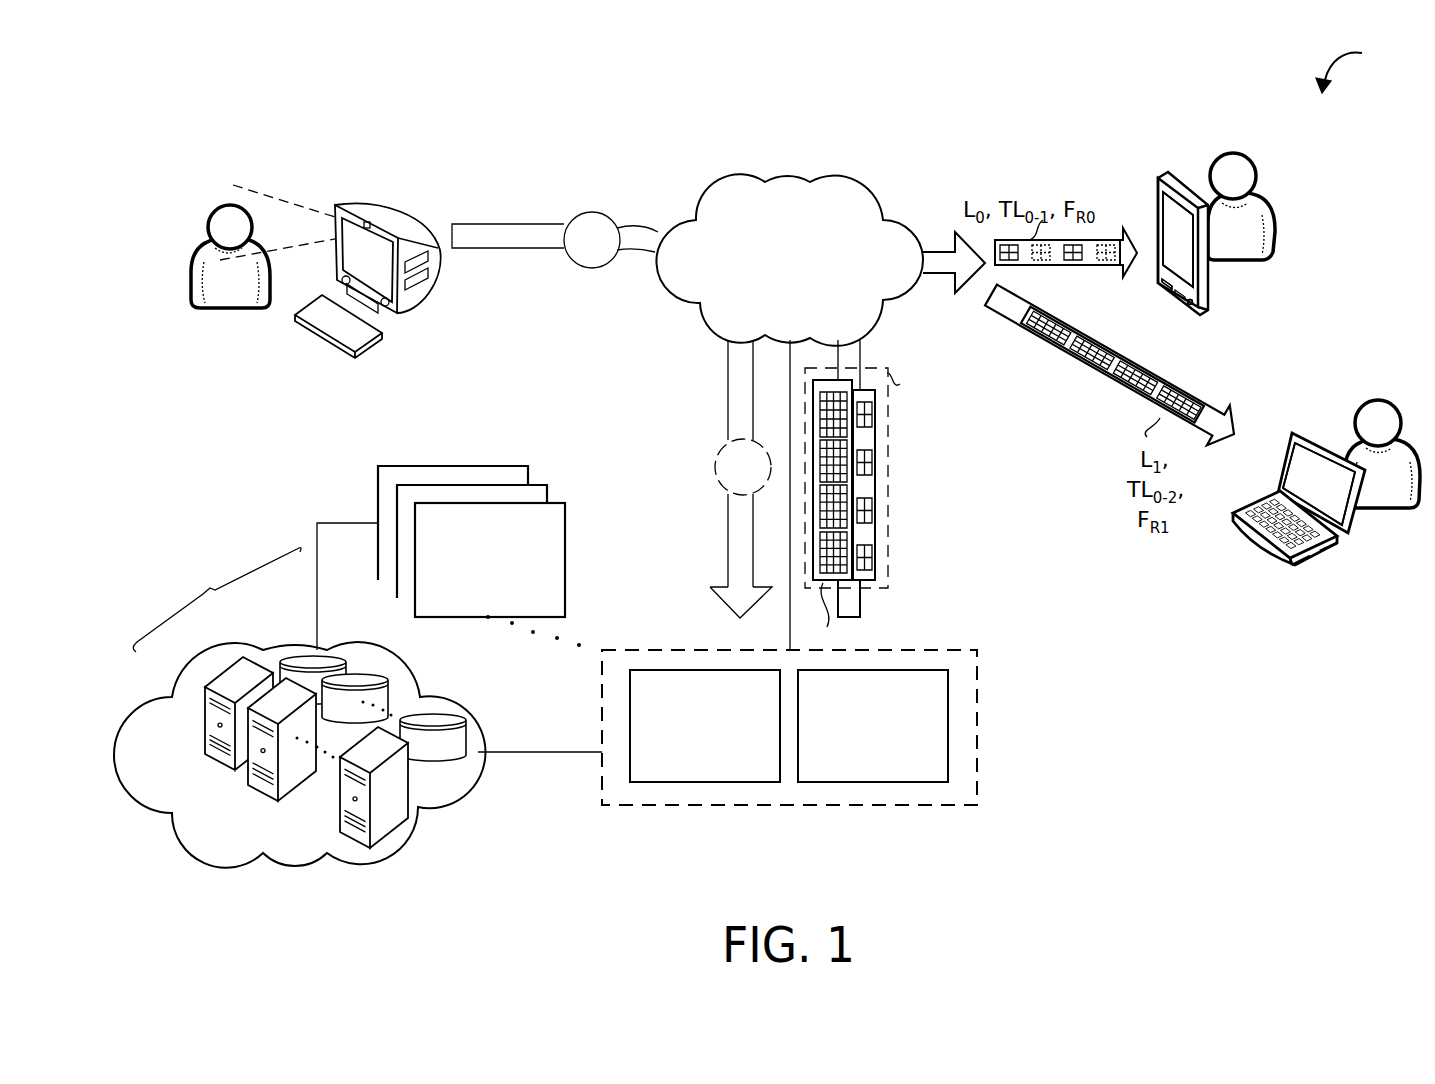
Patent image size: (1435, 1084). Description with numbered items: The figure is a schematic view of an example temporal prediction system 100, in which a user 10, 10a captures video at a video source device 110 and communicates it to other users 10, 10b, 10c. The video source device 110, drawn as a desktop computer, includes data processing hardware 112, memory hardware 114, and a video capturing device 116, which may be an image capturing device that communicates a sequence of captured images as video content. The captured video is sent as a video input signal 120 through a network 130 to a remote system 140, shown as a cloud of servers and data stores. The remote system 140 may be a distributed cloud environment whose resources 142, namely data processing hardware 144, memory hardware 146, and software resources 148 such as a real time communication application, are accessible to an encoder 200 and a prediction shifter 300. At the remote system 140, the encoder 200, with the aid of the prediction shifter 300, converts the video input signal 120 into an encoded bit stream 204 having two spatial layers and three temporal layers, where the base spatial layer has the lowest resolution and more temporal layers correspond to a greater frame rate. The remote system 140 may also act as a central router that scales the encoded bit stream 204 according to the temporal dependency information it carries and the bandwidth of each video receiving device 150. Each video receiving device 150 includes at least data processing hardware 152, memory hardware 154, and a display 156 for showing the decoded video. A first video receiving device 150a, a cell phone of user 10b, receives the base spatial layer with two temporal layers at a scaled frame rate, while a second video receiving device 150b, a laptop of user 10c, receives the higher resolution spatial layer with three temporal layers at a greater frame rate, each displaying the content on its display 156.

The temporal prediction system 100 is at (1364, 67).
The user 10 is at (801, 290).
The user 10a is at (228, 205).
The user 10b is at (1232, 153).
The user 10c is at (1375, 400).
The video source device 110 is at (403, 252).
The data processing hardware 112 is at (432, 253).
The memory hardware 114 is at (412, 290).
The video capturing device 116 is at (370, 223).
The video input signal 120 is at (590, 270).
The network 130 is at (828, 180).
The remote system 140 is at (346, 681).
The resources 142 is at (299, 698).
The data processing hardware 144 is at (225, 673).
The memory hardware 146 is at (305, 655).
The software resources 148 is at (378, 574).
The video receiving device 150 is at (1236, 328).
The first video receiving device 150a is at (1159, 176).
The second video receiving device 150b is at (1294, 434).
The data processing hardware 152 is at (1158, 287).
The memory hardware 154 is at (1188, 305).
The display 156 is at (1208, 282).
The encoder 200 is at (819, 705).
The encoded bit stream 204 is at (890, 480).
The prediction shifter 300 is at (950, 725).